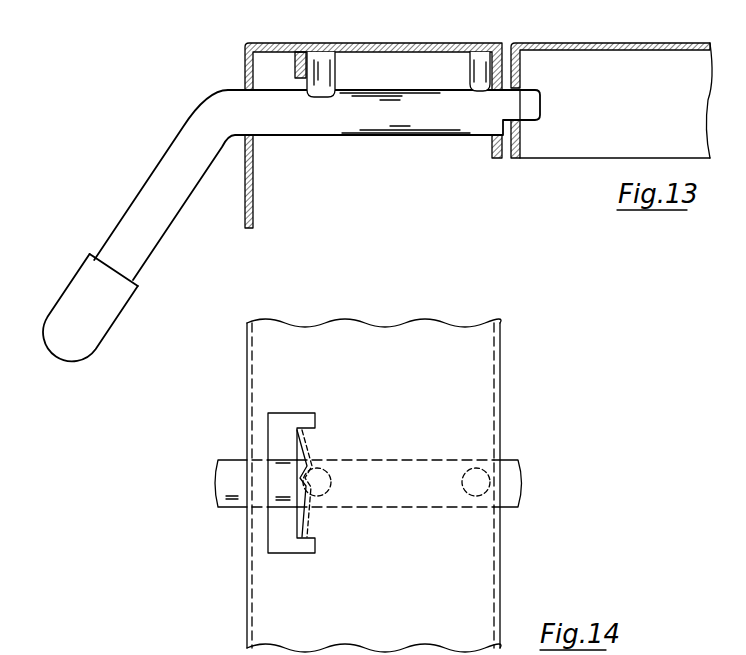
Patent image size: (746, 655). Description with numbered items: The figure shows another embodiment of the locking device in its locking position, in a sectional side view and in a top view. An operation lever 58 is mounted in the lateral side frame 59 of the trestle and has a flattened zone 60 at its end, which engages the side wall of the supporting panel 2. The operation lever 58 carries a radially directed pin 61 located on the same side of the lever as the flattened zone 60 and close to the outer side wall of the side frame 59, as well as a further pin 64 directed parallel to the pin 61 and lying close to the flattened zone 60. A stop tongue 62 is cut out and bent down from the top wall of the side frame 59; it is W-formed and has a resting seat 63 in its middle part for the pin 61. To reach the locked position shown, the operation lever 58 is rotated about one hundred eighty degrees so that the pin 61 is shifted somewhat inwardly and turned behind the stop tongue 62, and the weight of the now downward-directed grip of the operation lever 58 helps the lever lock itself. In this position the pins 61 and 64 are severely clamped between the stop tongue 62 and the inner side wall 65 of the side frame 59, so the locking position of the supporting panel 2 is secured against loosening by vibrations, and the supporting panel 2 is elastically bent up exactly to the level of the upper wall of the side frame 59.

In FIG. 13, the supporting panel 2 is at (578, 44).
In FIG. 13, the operation lever 58 is at (193, 166).
In FIG. 14, the operation lever 58 is at (235, 500).
In FIG. 13, the side frame 59 is at (402, 45).
In FIG. 14, the side frame 59 is at (273, 360).
In FIG. 13, the flattened zone 60 is at (523, 103).
In FIG. 13, the pin 61 is at (320, 70).
In FIG. 14, the pin 61 is at (325, 470).
In FIG. 13, the stop tongue 62 is at (298, 50).
In FIG. 14, the stop tongue 62 is at (300, 527).
In FIG. 14, the resting seat 63 is at (295, 460).
In FIG. 13, the further pin 64 is at (480, 68).
In FIG. 14, the further pin 64 is at (483, 466).
In FIG. 13, the inner side wall 65 is at (492, 152).